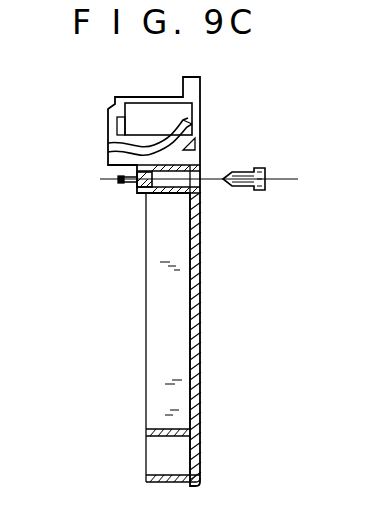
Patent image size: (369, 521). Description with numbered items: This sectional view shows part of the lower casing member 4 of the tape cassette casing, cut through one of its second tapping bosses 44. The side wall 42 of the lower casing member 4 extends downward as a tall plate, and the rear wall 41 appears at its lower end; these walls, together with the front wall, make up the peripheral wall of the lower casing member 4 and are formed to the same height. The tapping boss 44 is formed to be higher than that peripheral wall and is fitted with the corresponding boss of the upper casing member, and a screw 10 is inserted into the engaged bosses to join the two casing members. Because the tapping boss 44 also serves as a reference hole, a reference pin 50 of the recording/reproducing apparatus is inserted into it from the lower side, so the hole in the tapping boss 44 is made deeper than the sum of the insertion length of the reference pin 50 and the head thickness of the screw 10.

The lower casing member 4 is at (222, 260).
The side wall 42 is at (162, 323).
The rear wall 41 is at (182, 484).
The second tapping boss 44 is at (145, 199).
The screw 10 is at (131, 181).
The reference pin 50 is at (243, 168).